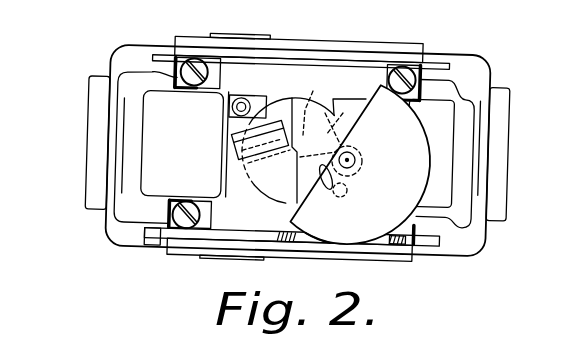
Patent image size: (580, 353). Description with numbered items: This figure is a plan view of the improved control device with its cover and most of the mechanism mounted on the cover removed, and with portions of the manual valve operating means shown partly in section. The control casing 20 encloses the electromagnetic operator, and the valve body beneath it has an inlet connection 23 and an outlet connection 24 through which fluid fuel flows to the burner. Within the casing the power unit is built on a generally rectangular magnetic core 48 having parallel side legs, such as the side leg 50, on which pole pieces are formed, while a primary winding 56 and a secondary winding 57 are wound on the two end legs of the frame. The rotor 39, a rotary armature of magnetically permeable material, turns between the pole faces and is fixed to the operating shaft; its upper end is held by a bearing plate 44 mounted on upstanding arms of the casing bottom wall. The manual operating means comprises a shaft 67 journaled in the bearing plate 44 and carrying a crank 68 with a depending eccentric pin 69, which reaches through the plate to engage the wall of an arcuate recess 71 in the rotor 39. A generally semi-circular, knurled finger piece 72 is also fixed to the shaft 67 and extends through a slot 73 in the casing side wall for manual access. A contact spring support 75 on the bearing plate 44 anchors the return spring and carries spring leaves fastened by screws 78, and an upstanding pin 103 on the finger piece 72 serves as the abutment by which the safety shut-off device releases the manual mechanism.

The control casing 20 is at (157, 236).
The inlet connection 23 is at (87, 132).
The outlet connection 24 is at (508, 173).
The rotor 39 is at (321, 113).
The bearing plate 44 is at (254, 186).
The magnetic core 48 is at (257, 83).
The side leg 50 is at (275, 218).
The primary winding 56 is at (196, 145).
The secondary winding 57 is at (438, 131).
The shaft 67 is at (352, 156).
The crank 68 is at (363, 172).
The eccentric pin 69 is at (349, 192).
The arcuate recess 71 is at (328, 116).
The finger piece 72 is at (346, 235).
The slot 73 is at (398, 246).
The contact spring support 75 is at (240, 160).
The screws 78 is at (262, 127).
The pin 103 is at (318, 190).